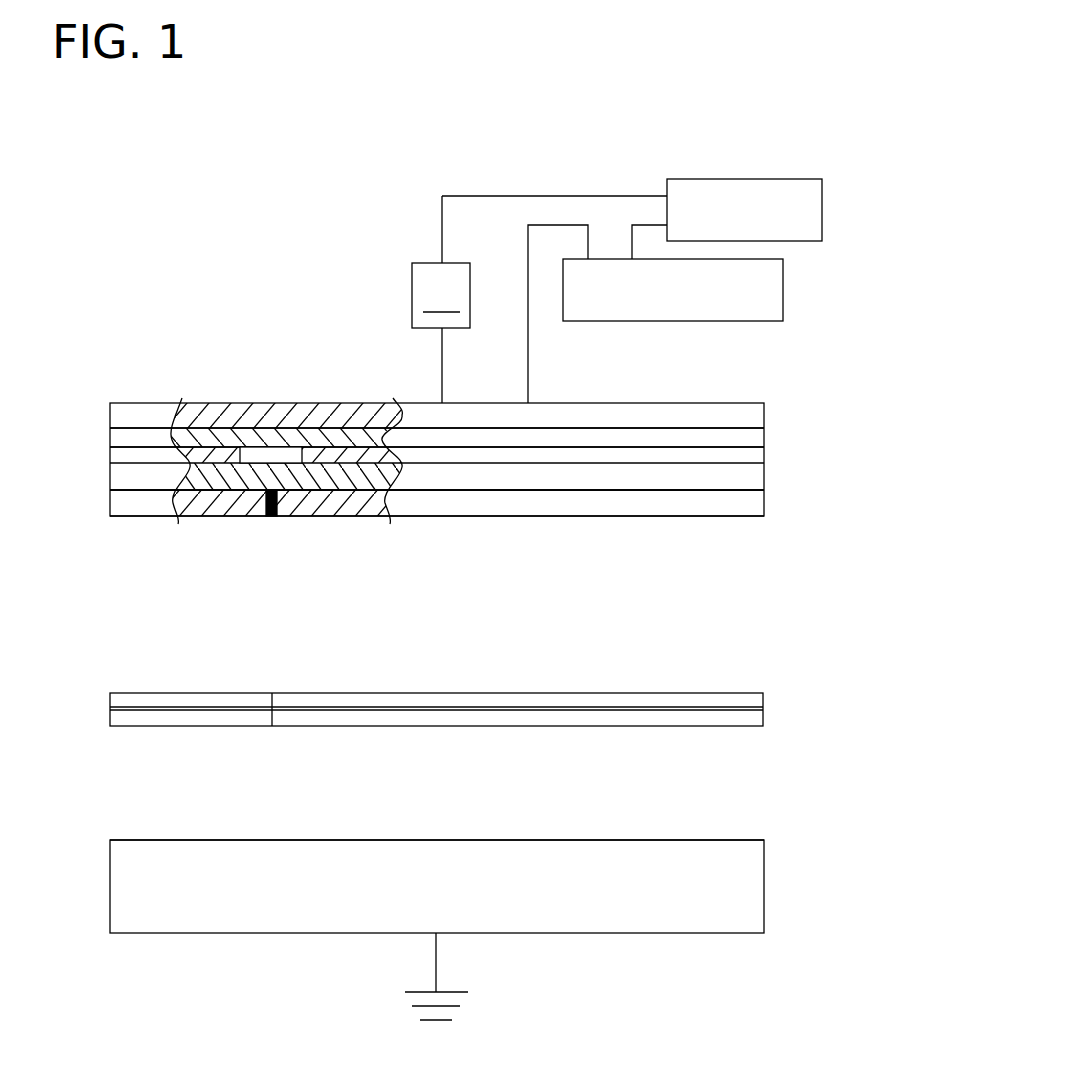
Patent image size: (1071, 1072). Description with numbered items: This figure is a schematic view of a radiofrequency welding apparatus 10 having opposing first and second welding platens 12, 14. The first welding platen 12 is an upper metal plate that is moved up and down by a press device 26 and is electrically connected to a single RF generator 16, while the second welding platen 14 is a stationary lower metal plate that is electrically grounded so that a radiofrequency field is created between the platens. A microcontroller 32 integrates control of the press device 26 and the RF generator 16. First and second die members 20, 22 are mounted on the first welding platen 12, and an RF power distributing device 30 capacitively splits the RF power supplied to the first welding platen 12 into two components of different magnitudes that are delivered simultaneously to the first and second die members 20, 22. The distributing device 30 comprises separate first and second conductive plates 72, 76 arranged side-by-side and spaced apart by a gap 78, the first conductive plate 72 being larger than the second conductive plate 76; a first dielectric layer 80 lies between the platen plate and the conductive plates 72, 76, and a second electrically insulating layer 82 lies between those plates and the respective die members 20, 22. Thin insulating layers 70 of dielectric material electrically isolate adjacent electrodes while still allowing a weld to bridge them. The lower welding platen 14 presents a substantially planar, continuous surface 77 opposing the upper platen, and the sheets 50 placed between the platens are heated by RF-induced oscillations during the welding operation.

The RF welding apparatus 10 is at (752, 132).
The first welding platen 12 is at (770, 398).
The second welding platen 14 is at (770, 893).
The RF generator 16 is at (792, 298).
The first die member 20 is at (622, 516).
The second die member 22 is at (138, 517).
The press device 26 is at (406, 288).
The RF power distributing device 30 is at (838, 428).
The microcontroller 32 is at (830, 210).
The sheets 50 is at (705, 693).
The insulating layers 70 is at (268, 517).
The first conductive plate 72 is at (766, 457).
The second conductive plate 76 is at (110, 456).
The continuous surface 77 is at (368, 840).
The gap 78 is at (277, 457).
The first dielectric layer 80 is at (766, 438).
The second electrically insulating layer 82 is at (766, 478).